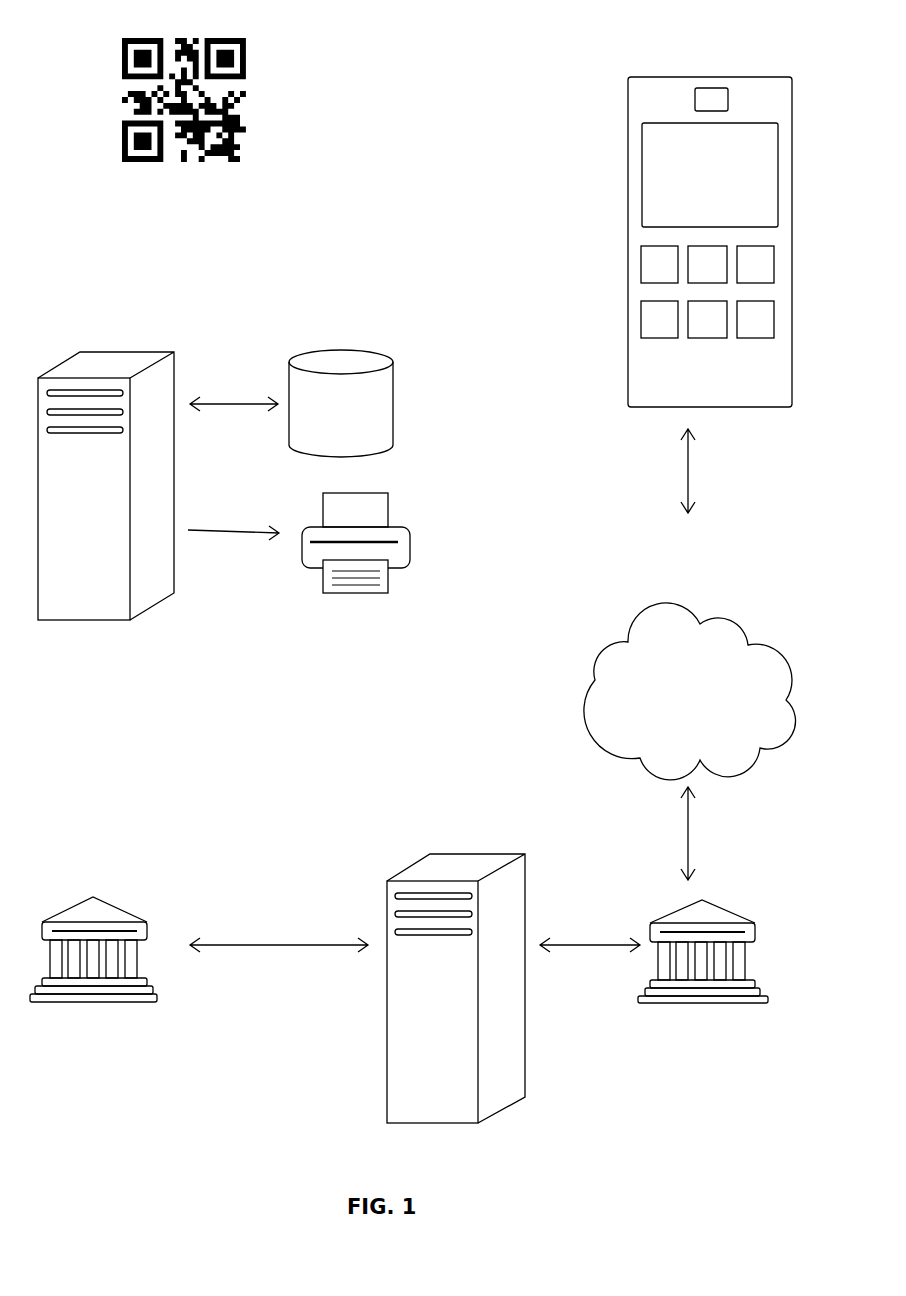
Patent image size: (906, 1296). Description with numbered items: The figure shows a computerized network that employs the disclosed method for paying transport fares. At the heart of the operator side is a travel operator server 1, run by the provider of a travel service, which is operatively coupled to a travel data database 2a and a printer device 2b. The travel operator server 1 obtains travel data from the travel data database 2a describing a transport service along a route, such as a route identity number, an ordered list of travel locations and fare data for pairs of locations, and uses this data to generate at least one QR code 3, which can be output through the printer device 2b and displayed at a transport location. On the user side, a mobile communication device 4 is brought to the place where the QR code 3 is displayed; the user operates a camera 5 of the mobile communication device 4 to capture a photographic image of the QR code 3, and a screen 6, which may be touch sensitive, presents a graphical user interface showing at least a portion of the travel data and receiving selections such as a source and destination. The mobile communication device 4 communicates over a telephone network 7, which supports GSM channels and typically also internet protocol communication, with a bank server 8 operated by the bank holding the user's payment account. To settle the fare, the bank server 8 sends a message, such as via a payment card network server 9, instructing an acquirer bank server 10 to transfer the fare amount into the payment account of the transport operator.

The travel operator server 1 is at (100, 352).
The travel data database 2a is at (338, 348).
The printer device 2b is at (392, 515).
The QR code 3 is at (248, 145).
The mobile communication device 4 is at (674, 208).
The camera 5 is at (717, 88).
The screen 6 is at (642, 173).
The telephone network 7 is at (690, 691).
The bank server 8 is at (687, 1003).
The payment card network server 9 is at (388, 953).
The acquirer bank server 10 is at (127, 908).